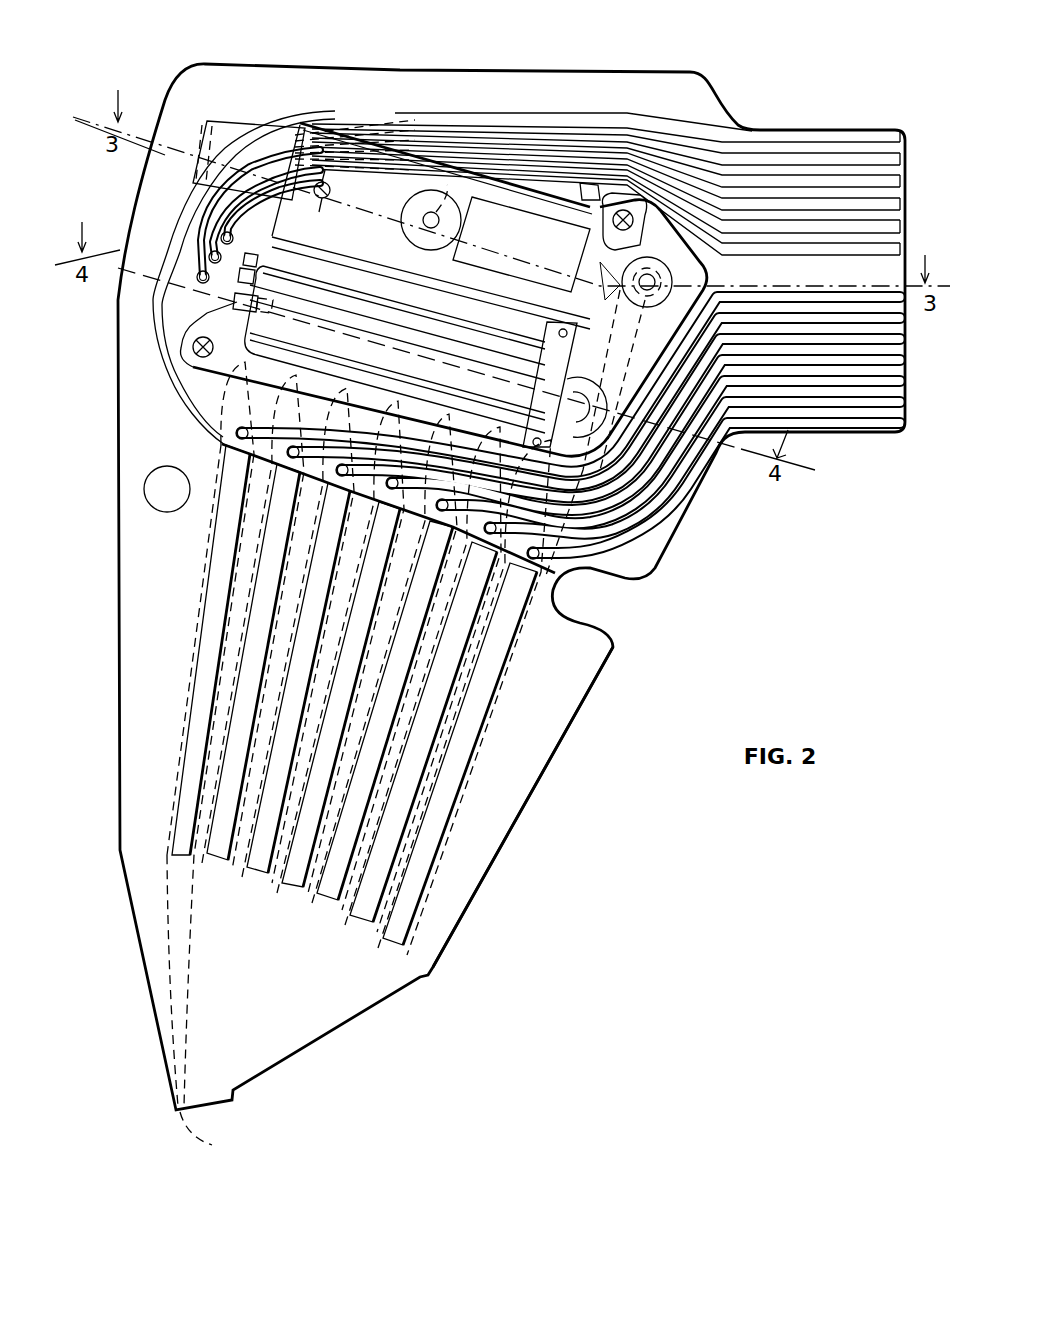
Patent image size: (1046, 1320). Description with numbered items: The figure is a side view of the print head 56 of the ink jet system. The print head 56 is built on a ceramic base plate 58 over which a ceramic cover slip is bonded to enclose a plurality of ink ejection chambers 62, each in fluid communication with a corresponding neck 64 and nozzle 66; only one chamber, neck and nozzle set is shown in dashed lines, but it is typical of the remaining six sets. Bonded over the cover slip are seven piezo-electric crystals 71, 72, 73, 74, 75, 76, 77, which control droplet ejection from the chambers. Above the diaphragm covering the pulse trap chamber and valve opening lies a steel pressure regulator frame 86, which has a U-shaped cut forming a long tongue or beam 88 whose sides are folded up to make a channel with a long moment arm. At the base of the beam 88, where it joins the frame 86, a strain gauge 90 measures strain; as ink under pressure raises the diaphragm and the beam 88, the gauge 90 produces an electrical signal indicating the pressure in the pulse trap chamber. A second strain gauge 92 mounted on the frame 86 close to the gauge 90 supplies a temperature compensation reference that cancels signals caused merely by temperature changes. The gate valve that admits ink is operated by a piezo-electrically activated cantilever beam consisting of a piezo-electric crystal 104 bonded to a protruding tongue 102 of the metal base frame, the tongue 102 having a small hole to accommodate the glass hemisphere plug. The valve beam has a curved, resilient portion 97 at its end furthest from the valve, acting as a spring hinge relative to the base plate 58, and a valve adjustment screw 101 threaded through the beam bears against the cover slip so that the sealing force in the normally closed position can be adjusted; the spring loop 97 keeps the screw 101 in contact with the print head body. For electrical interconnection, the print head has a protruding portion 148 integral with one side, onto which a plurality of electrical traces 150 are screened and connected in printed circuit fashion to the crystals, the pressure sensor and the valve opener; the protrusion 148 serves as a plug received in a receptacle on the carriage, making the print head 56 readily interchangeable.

The print head 56 is at (425, 68).
The ceramic base plate 58 is at (531, 780).
The ink ejection chambers 62 is at (196, 630).
The necks 64 is at (163, 992).
The nozzles 66 is at (209, 1137).
The piezo-electric crystal 71 is at (187, 823).
The piezo-electric crystal 72 is at (218, 864).
The piezo-electric crystal 73 is at (257, 872).
The piezo-electric crystal 74 is at (293, 889).
The piezo-electric crystal 75 is at (321, 902).
The piezo-electric crystal 76 is at (357, 922).
The piezo-electric crystal 77 is at (392, 944).
The pressure regulator frame 86 is at (235, 372).
The beam 88 is at (300, 343).
The strain gauge 90 is at (236, 304).
The second strain gauge 92 is at (240, 262).
The curved resilient portion 97 is at (231, 128).
The valve adjustment screw 101 is at (323, 178).
The protruding tongue 102 is at (625, 208).
The piezo-electric crystal 104 is at (519, 222).
The protruding portion 148 is at (784, 131).
The electrical traces 150 is at (864, 142).